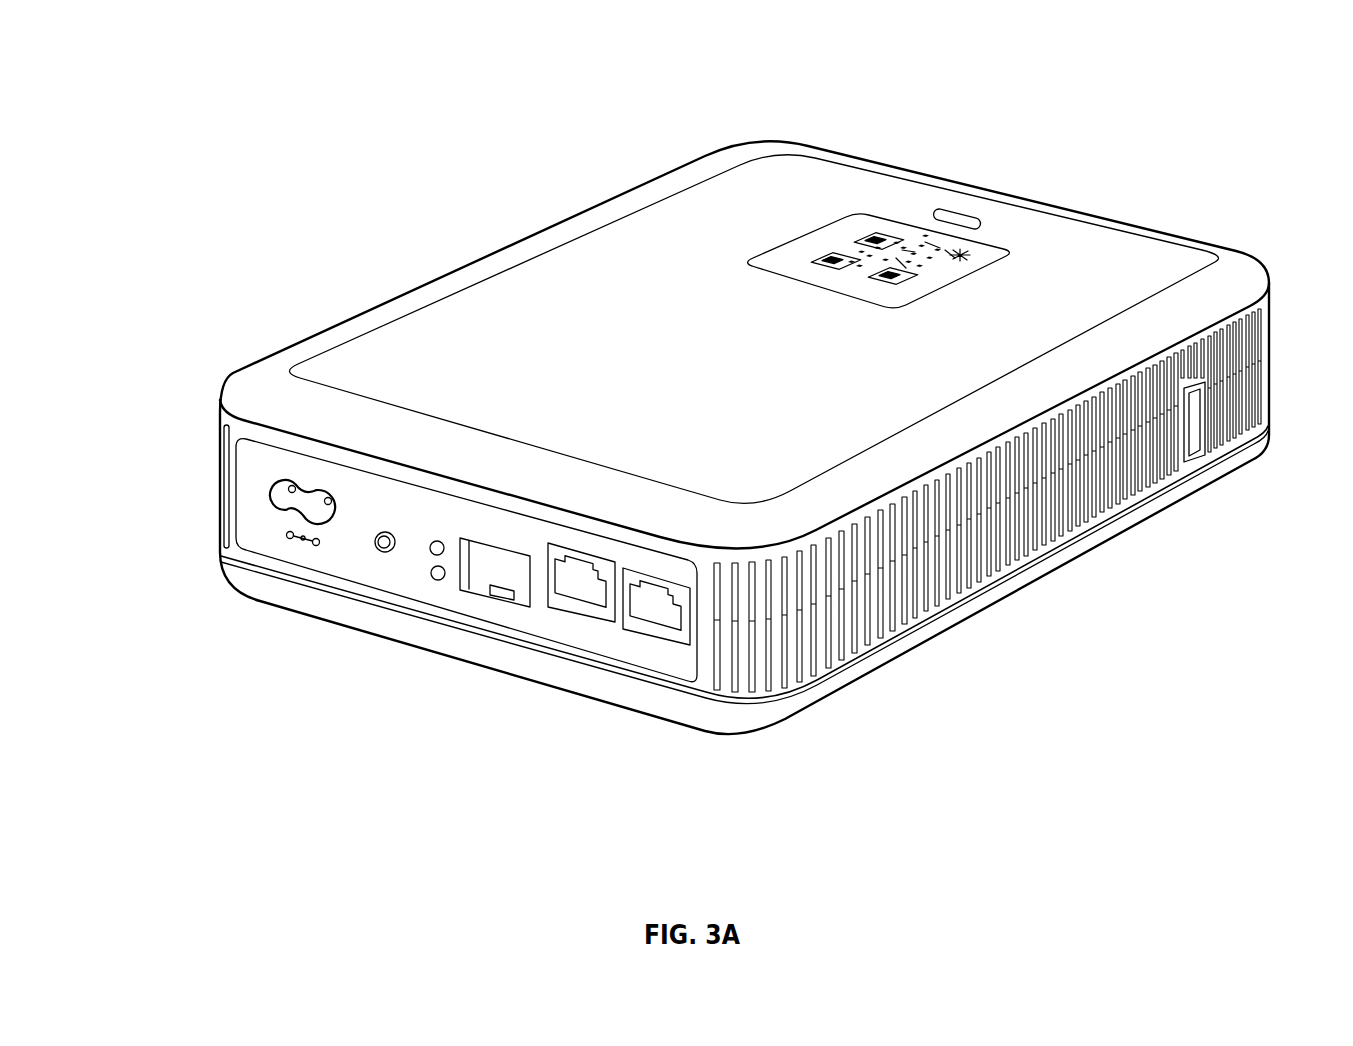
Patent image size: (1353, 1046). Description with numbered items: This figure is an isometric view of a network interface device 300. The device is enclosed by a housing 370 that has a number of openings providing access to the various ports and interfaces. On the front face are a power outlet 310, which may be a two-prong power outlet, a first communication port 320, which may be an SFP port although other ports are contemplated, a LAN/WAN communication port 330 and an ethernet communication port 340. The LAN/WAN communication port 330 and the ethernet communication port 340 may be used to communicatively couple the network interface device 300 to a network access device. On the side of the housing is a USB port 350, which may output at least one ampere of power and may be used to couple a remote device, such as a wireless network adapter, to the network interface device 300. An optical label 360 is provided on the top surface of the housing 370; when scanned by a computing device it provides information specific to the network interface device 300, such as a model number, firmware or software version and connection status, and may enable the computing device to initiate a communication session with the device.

The network interface device 300 is at (340, 168).
The power outlet 310 is at (263, 497).
The first communication port 320 is at (477, 590).
The LAN/WAN communication port 330 is at (580, 613).
The ethernet communication port 340 is at (650, 633).
The USB port 350 is at (1196, 458).
The optical label 360 is at (851, 215).
The housing 370 is at (697, 161).